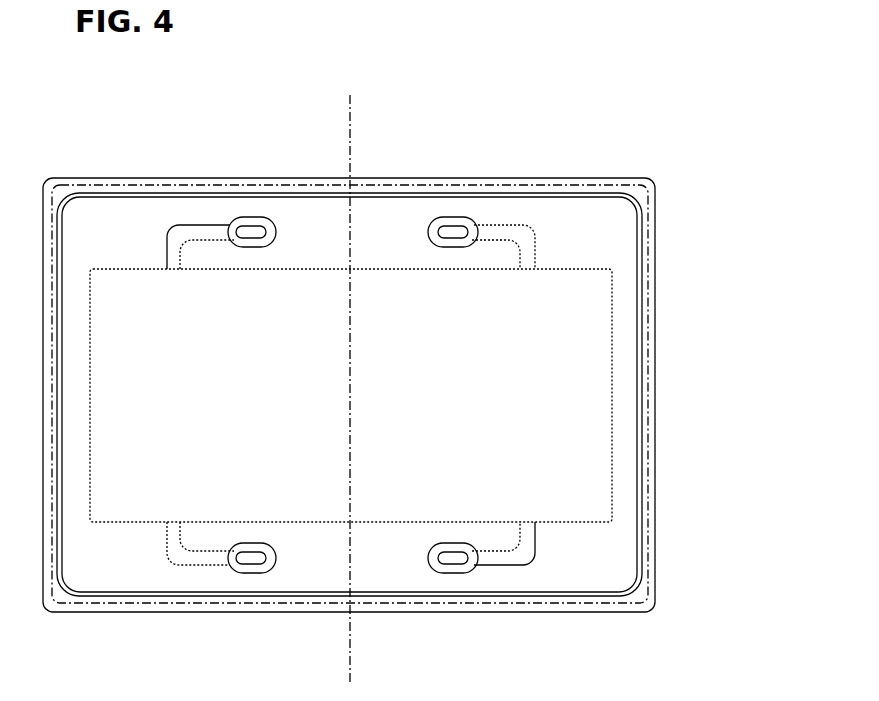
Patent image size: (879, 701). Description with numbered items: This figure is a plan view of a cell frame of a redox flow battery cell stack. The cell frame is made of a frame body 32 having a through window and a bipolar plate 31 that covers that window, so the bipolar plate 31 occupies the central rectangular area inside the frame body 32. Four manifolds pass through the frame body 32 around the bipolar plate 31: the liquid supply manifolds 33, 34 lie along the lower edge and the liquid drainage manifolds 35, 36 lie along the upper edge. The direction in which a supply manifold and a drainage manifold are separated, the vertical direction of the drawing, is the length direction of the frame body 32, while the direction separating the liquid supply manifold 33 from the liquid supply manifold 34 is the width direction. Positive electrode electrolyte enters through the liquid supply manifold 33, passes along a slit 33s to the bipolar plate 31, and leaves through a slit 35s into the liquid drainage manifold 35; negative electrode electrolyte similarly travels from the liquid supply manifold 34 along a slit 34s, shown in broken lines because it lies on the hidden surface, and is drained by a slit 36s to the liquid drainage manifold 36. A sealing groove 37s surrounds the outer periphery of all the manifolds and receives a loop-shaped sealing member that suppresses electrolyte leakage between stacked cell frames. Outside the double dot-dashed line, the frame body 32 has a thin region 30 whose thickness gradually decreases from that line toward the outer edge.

The thin region 30 is at (325, 175).
The bipolar plate 31 is at (563, 355).
The frame body 32 is at (100, 230).
The liquid supply manifold 33 is at (455, 560).
The tab strip 33s is at (515, 557).
The liquid supply manifold 34 is at (250, 558).
The tab strip 34s is at (175, 556).
The liquid drainage manifold 35 is at (250, 232).
The tab strip 35s is at (195, 232).
The liquid drainage manifold 36 is at (453, 232).
The tab strip 36s is at (517, 228).
The sealing groove 37s is at (640, 453).